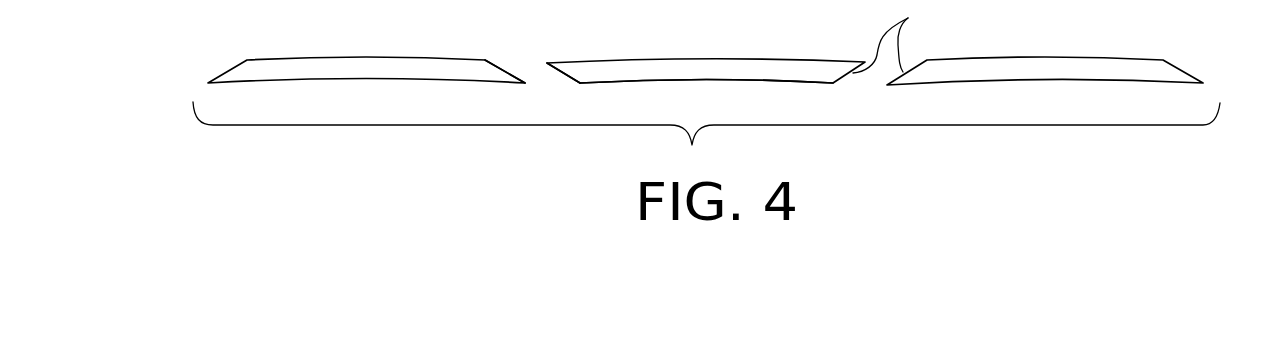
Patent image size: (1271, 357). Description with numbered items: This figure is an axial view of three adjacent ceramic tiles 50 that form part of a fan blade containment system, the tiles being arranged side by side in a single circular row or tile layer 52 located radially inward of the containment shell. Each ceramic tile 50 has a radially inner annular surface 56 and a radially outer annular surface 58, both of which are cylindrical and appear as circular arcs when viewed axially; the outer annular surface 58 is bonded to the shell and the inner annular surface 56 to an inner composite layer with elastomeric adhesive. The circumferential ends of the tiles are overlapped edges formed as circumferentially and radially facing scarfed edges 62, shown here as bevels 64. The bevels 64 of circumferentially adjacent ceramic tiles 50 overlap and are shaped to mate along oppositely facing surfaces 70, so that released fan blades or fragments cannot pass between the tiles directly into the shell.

The ceramic tiles 50 is at (348, 68).
The circular row or tile layer 52 is at (205, 78).
The radially inner annular surface 56 is at (747, 80).
The radially outer annular surface 58 is at (740, 57).
The scarfed edges 62 is at (541, 110).
The bevels 64 is at (1183, 68).
The oppositely facing surfaces 70 is at (900, 38).